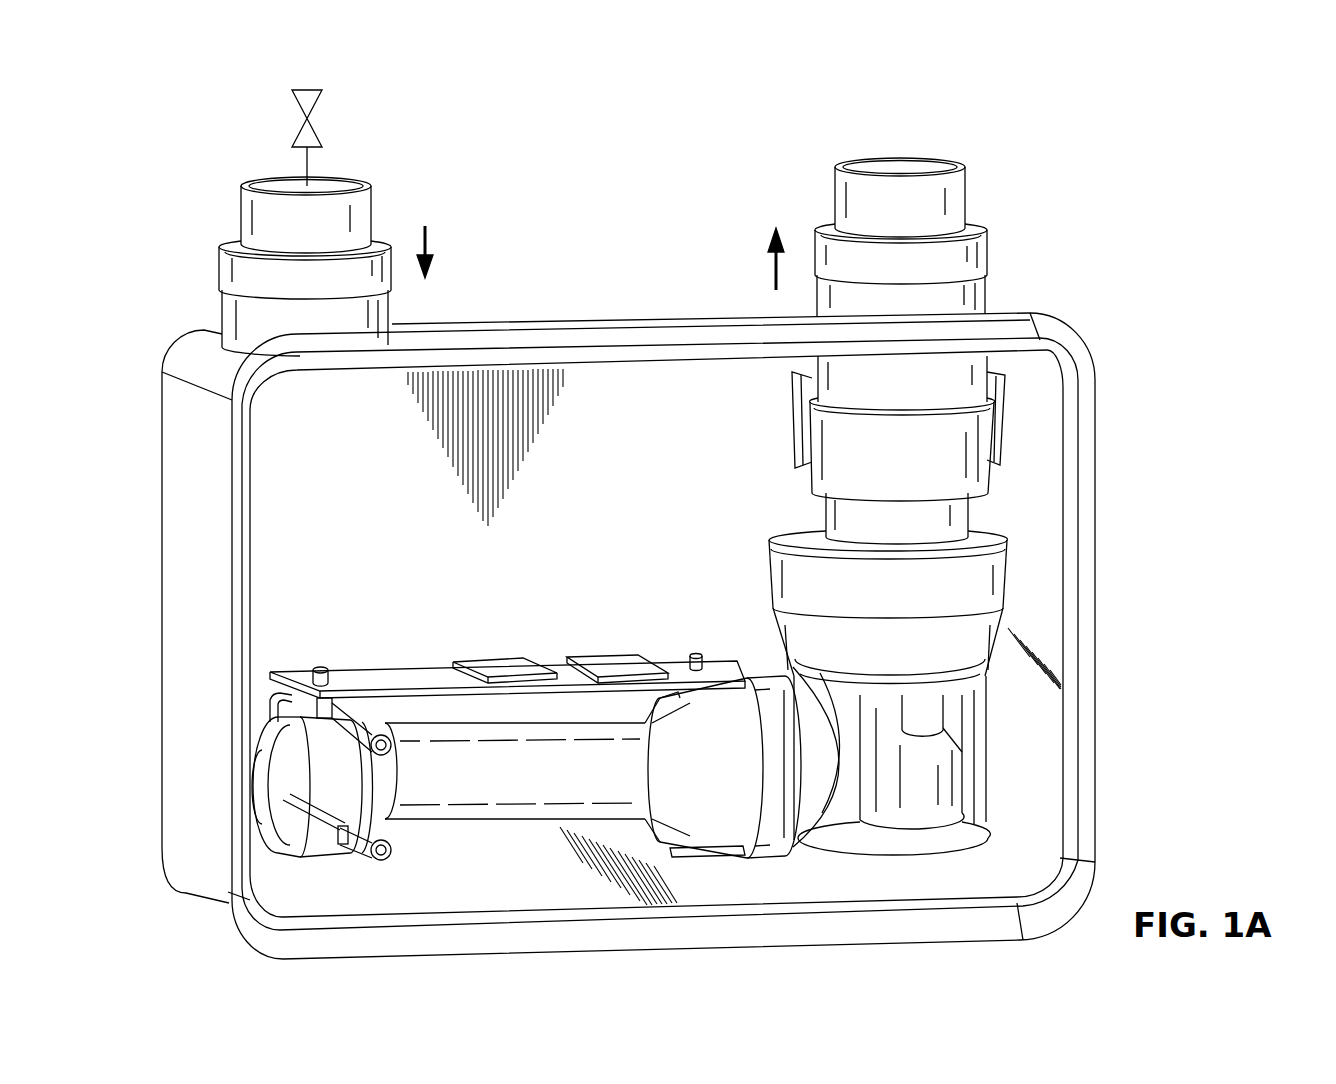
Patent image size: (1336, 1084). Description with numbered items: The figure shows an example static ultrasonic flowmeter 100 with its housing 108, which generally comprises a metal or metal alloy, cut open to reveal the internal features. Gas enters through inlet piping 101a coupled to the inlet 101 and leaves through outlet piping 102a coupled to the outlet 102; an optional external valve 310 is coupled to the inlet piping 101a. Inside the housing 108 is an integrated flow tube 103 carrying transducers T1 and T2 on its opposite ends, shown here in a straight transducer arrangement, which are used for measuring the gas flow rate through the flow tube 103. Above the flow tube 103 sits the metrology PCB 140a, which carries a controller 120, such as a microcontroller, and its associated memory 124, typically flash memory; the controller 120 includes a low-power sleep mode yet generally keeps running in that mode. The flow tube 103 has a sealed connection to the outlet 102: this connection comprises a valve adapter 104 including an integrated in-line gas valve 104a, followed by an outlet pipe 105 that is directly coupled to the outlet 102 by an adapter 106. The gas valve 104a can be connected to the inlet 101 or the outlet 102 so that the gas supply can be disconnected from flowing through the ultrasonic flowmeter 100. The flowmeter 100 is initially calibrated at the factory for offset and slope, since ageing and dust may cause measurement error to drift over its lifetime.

The ultrasonic flowmeter 100 is at (740, 114).
The inlet 101 is at (220, 262).
The inlet piping 101a is at (238, 198).
The external valve 310 is at (282, 106).
The outlet 102 is at (990, 248).
The outlet piping 102a is at (970, 184).
The housing 108 is at (604, 320).
The adapter 106 is at (790, 428).
The outlet pipe 105 is at (815, 510).
The valve adapter 104 is at (770, 590).
The integrated in-line gas valve 104a is at (962, 772).
The metrology PCB 140a is at (350, 668).
The controller 120 is at (485, 660).
The memory 124 is at (600, 655).
The flow tube 103 is at (510, 826).
The transducer T1 is at (312, 787).
The transducer T2 is at (724, 767).